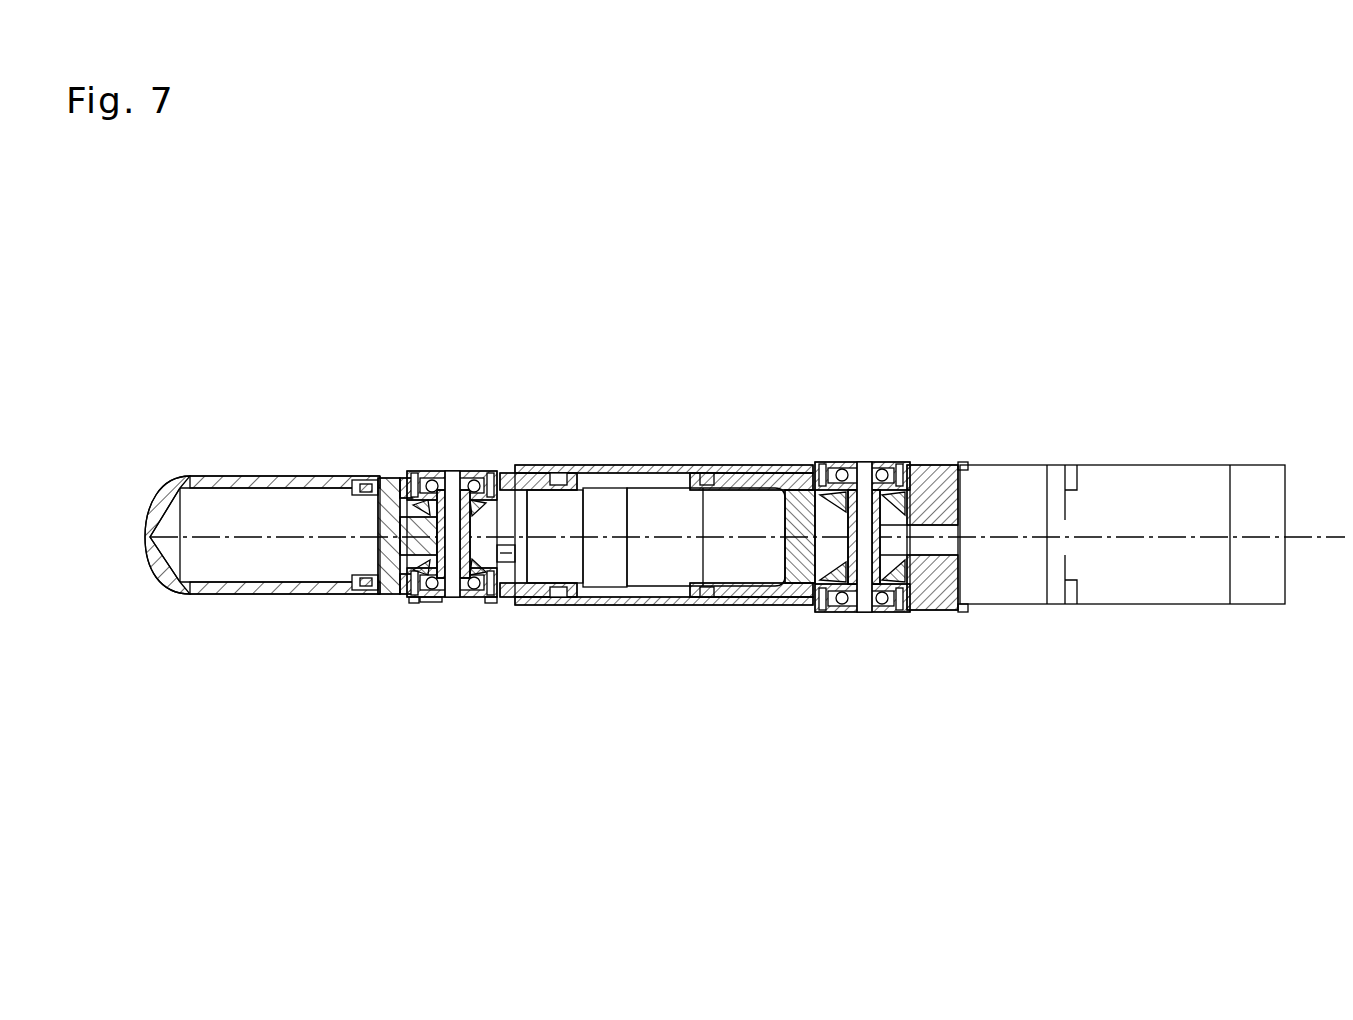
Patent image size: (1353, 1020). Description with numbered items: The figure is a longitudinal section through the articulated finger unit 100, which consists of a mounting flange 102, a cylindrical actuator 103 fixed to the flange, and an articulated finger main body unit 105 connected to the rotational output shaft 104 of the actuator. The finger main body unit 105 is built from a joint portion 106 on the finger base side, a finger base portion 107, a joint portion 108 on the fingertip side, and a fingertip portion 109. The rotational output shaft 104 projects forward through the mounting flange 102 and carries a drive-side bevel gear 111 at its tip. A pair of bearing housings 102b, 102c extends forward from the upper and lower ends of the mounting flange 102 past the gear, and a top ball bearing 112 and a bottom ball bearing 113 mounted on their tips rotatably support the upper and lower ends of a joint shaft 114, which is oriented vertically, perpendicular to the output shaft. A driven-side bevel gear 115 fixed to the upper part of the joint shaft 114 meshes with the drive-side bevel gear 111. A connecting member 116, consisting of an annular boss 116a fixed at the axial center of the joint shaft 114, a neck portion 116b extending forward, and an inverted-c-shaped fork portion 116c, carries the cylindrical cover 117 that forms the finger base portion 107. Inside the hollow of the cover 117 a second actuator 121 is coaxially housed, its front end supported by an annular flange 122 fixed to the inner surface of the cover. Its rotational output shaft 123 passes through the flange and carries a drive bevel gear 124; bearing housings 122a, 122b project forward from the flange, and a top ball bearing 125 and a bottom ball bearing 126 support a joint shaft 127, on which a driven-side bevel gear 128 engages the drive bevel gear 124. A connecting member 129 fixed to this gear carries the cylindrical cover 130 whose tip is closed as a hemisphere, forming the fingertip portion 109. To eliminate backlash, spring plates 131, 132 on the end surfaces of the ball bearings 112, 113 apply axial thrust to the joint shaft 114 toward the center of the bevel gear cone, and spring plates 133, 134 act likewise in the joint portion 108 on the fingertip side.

The articulated finger unit 100 is at (975, 310).
The mounting flange 102 is at (1002, 467).
The bearing housing 102b is at (927, 462).
The bearing housing 102c is at (913, 607).
The actuator 103 is at (1177, 467).
The rotational output shaft 104 is at (942, 607).
The articulated finger main body unit 105 is at (830, 350).
The joint portion 106 is at (862, 442).
The finger base portion 107 is at (668, 450).
The joint portion 108 is at (465, 468).
The fingertip portion 109 is at (285, 468).
The drive-side bevel gear 111 is at (885, 602).
The top ball bearing 112 is at (877, 462).
The bottom ball bearing 113 is at (848, 605).
The joint shaft 114 is at (780, 600).
The driven-side bevel gear 115 is at (817, 463).
The connecting member 116 is at (780, 507).
The annular boss 116a is at (885, 527).
The neck portion 116b is at (697, 600).
The fork portion 116c is at (733, 470).
The cylindrical cover 117 is at (583, 603).
The second actuator 121 is at (633, 505).
The annular flange 122 is at (522, 606).
The bearing housing 122a is at (534, 468).
The bearing housing 122b is at (493, 600).
The rotational output shaft 123 is at (500, 470).
The drive bevel gear 124 is at (442, 598).
The top ball bearing 125 is at (425, 470).
The bottom ball bearing 126 is at (430, 575).
The joint shaft 127 is at (373, 552).
The driven-side bevel gear 128 is at (380, 476).
The connecting member 129 is at (358, 522).
The cylindrical cover 130 is at (205, 478).
The spring plate 131 is at (890, 462).
The spring plate 132 is at (838, 605).
The spring plate 133 is at (445, 470).
The spring plate 134 is at (423, 603).